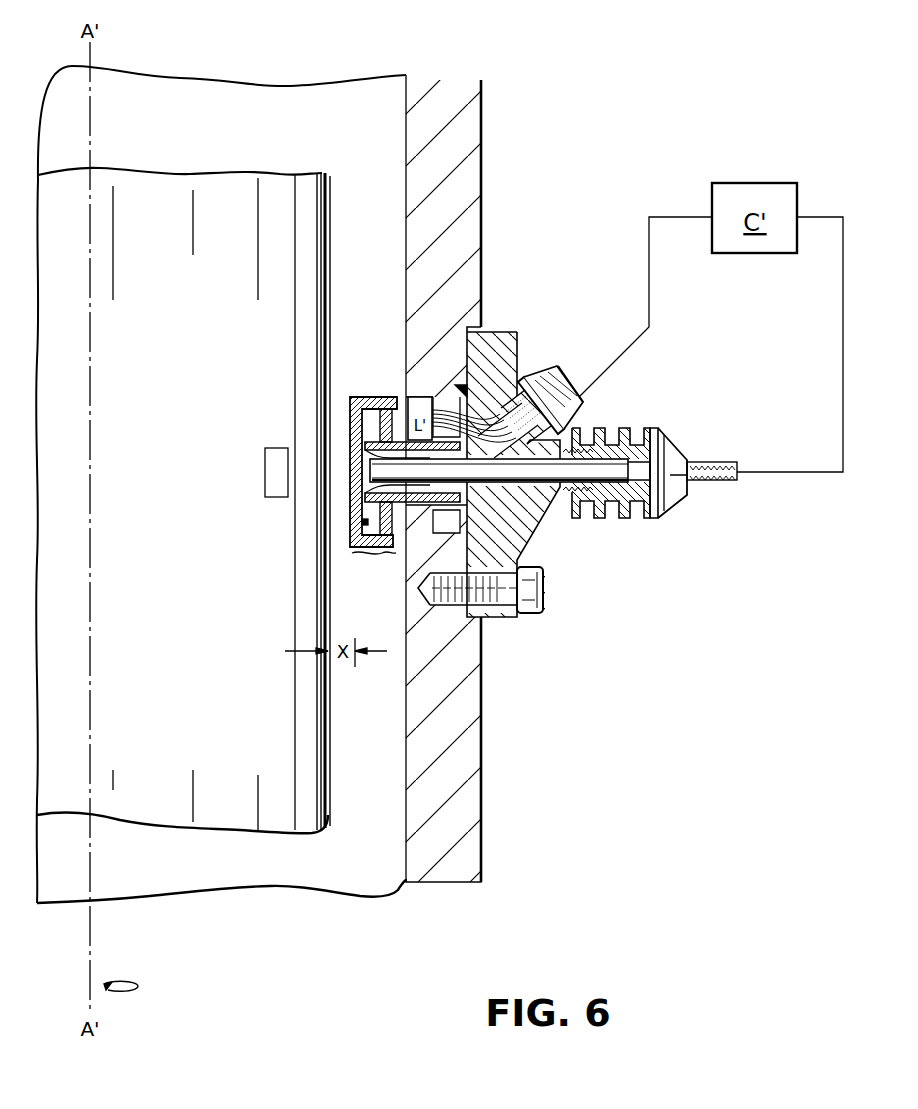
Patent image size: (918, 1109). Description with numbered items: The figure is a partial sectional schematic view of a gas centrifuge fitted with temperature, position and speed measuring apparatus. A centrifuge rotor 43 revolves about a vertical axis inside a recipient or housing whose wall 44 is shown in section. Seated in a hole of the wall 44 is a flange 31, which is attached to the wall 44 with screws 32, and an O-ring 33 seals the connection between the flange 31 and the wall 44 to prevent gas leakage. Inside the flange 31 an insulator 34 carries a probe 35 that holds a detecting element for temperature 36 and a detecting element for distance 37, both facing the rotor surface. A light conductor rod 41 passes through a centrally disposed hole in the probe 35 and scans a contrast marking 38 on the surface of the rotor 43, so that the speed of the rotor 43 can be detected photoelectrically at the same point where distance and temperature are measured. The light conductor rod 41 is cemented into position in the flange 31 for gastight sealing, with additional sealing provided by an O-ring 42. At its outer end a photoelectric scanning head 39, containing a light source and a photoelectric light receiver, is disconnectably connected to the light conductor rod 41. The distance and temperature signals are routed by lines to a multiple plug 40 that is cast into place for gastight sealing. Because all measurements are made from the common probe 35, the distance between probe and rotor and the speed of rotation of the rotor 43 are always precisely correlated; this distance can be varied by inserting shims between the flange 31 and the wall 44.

The flange 31 is at (496, 347).
The screws 32 is at (544, 598).
The O-ring 33 is at (465, 394).
The insulator 34 is at (404, 427).
The probe 35 is at (372, 557).
The detecting element for temperature 36 is at (360, 522).
The detecting element for distance 37 is at (360, 430).
The contrast marking 38 is at (272, 482).
The photoelectric scanning head 39 is at (668, 458).
The multiple plug 40 is at (580, 404).
The light conductor rod 41 is at (612, 462).
The O-ring 42 is at (592, 492).
The rotor 43 is at (207, 795).
The wall 44 is at (457, 822).